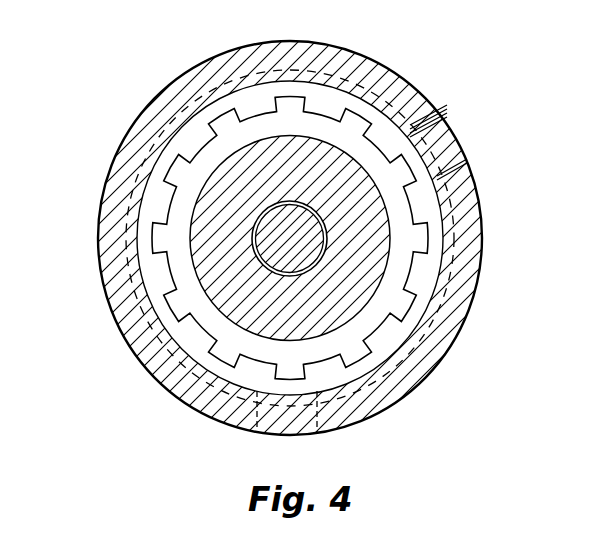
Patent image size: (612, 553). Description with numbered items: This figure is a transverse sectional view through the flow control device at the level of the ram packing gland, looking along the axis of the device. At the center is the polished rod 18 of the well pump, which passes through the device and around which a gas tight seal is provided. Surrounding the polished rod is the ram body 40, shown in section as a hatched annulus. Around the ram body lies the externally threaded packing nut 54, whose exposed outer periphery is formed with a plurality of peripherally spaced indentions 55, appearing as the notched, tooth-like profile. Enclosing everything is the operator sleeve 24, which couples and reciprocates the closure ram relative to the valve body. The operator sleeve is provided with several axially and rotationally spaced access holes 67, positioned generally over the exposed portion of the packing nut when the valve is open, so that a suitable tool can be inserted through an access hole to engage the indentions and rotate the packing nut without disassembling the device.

The polished rod 18 is at (327, 243).
The operator sleeve 24 is at (108, 308).
The ram body 40 is at (210, 214).
The packing nut 54 is at (410, 302).
The indentions 55 is at (194, 323).
The access holes 67 is at (152, 122).